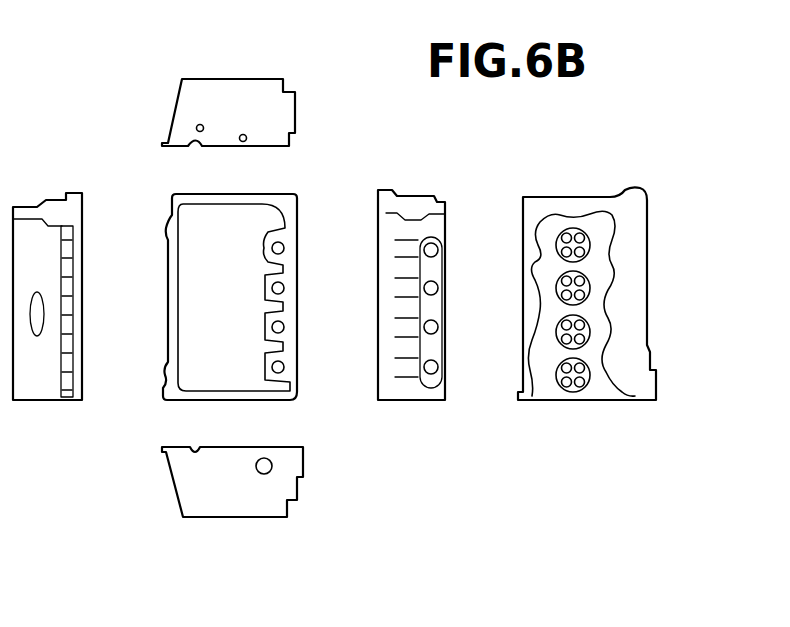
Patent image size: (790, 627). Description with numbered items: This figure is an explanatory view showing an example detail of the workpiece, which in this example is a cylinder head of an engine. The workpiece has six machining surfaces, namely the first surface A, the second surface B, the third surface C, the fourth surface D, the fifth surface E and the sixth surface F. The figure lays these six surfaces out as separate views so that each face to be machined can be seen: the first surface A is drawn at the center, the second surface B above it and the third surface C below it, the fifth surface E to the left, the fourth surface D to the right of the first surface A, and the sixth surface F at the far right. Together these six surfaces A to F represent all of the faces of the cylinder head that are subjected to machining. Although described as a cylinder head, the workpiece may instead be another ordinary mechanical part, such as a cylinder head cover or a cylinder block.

The first surface A is at (240, 311).
The second surface B is at (237, 92).
The third surface C is at (232, 498).
The fourth surface D is at (414, 208).
The fifth surface E is at (50, 232).
The sixth surface F is at (628, 302).